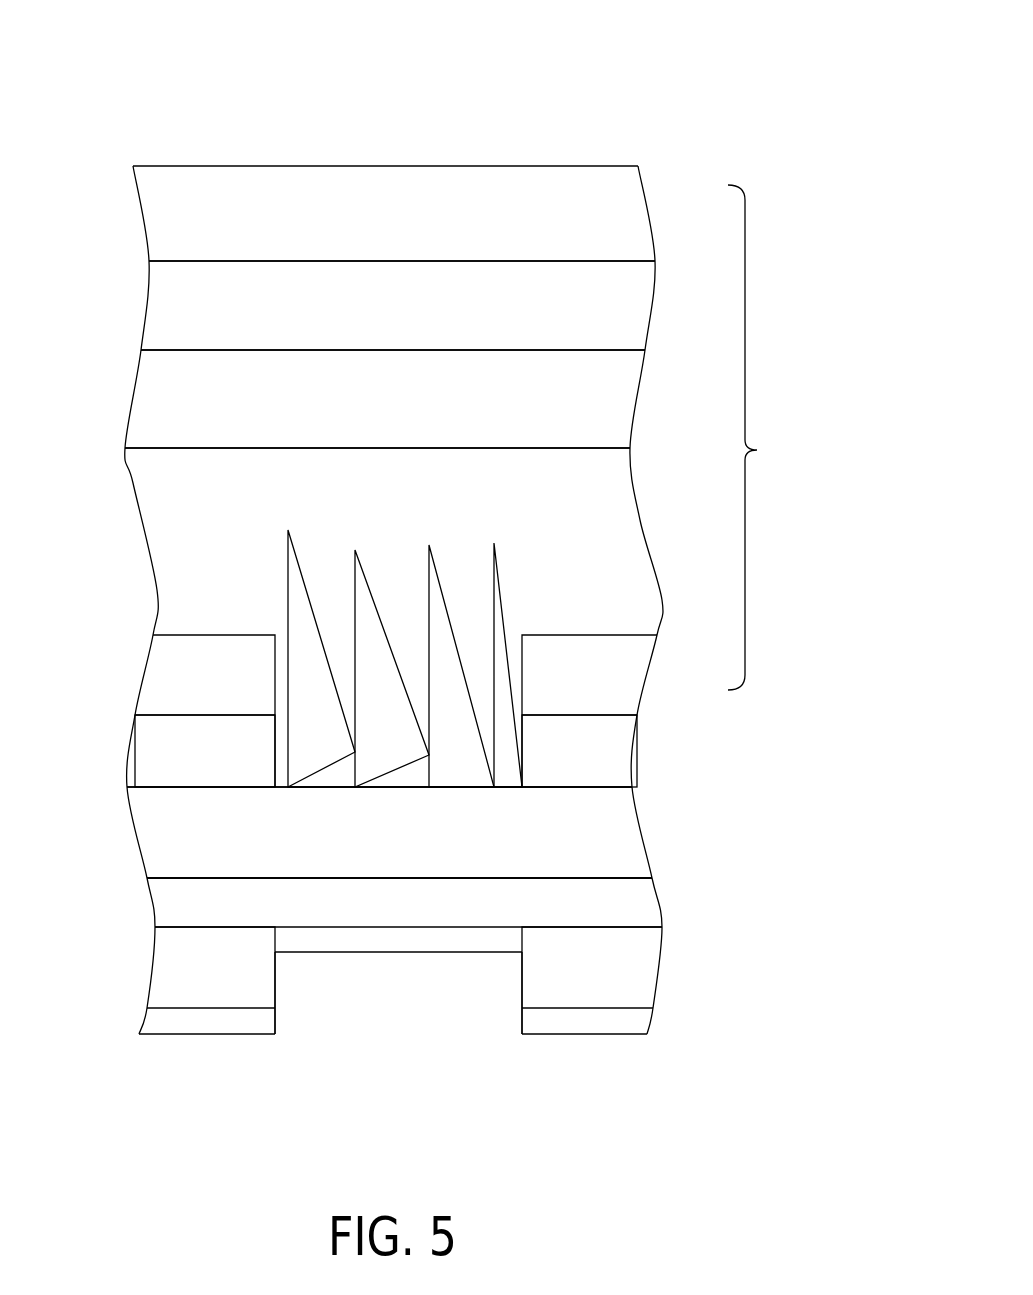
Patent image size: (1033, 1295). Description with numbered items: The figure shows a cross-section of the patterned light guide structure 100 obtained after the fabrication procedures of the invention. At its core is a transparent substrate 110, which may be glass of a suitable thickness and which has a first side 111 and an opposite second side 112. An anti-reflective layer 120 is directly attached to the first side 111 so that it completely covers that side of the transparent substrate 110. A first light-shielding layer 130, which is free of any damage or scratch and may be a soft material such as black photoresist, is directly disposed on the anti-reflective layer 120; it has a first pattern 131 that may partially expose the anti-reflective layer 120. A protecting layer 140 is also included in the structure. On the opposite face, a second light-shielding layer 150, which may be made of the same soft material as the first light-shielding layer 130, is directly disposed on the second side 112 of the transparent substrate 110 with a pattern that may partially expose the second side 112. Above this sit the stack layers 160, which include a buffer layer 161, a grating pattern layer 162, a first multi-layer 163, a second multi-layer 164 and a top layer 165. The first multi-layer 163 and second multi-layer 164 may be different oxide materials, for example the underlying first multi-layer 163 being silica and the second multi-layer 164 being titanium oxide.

The patterned light guide structure 100 is at (578, 74).
The transparent substrate 110 is at (624, 836).
The first side 111 is at (612, 878).
The second side 112 is at (602, 787).
The anti-reflective layer 120 is at (158, 902).
The first light-shielding layer 130 is at (645, 968).
The first pattern 131 is at (436, 987).
The protecting layer 140 is at (213, 1027).
The second light-shielding layer 150 is at (620, 741).
The stack layers 160 is at (757, 450).
The buffer layer 161 is at (640, 671).
The grating pattern layer 162 is at (636, 540).
The first multi-layer 163 is at (622, 397).
The second multi-layer 164 is at (643, 310).
The top layer 165 is at (637, 216).